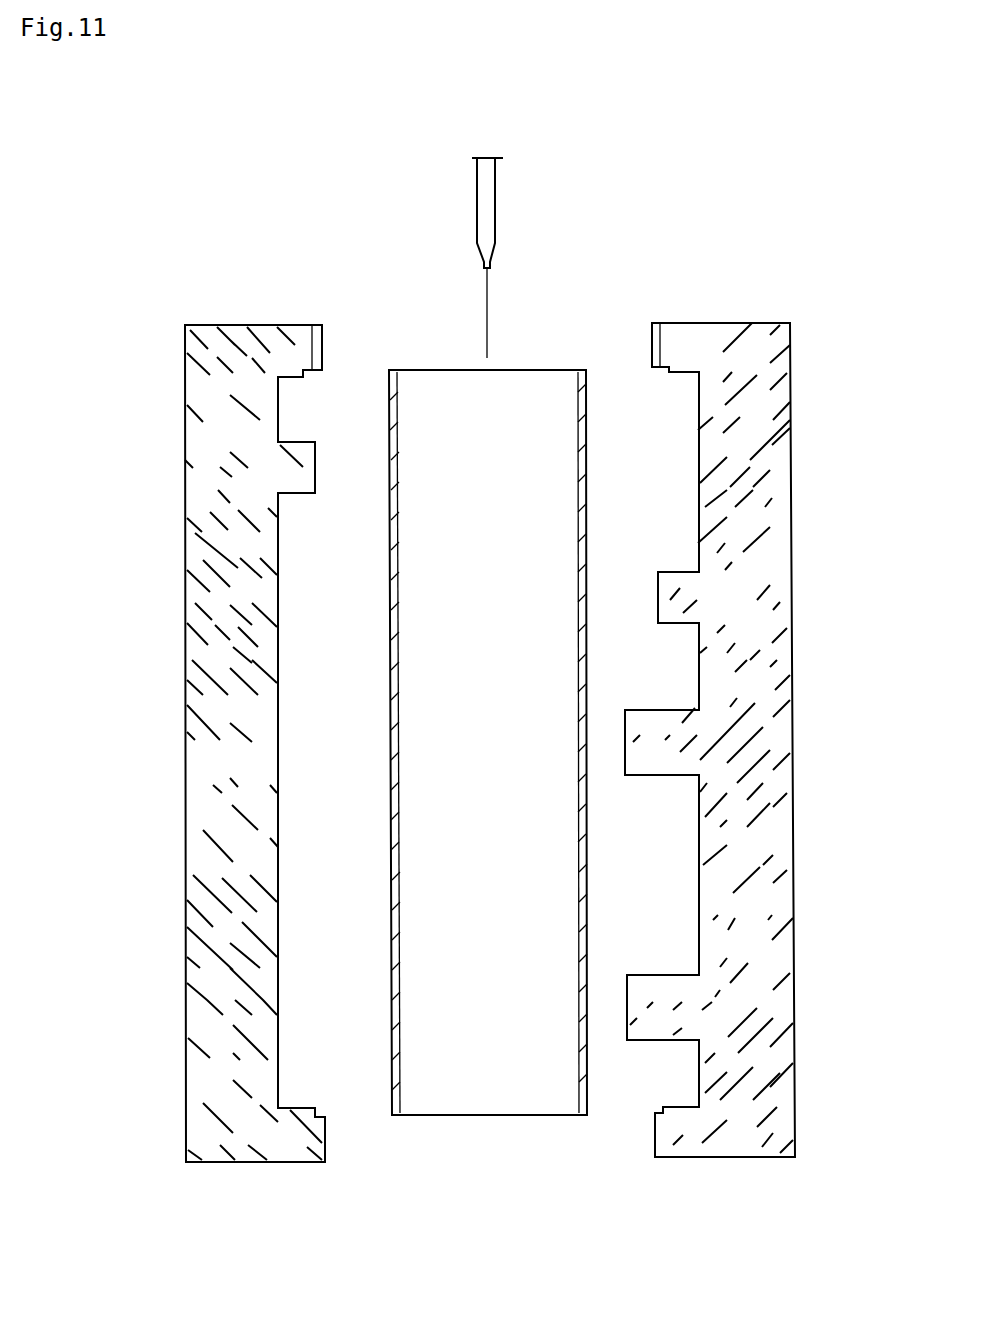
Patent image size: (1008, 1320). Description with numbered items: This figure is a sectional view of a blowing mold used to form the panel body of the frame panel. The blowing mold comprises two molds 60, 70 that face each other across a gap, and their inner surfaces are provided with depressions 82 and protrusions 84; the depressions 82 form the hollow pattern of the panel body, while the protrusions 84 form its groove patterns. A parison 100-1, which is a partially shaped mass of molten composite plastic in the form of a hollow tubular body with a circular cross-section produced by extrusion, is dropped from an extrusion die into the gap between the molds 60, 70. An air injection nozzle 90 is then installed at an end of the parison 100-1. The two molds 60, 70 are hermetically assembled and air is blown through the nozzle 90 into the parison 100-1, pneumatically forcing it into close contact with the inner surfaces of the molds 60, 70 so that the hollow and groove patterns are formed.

The mold 60 is at (198, 1008).
The mold 70 is at (772, 1068).
The depression 82 is at (662, 450).
The protrusion 84 is at (316, 484).
The air injection nozzle 90 is at (477, 187).
The parison 100-1 is at (395, 842).